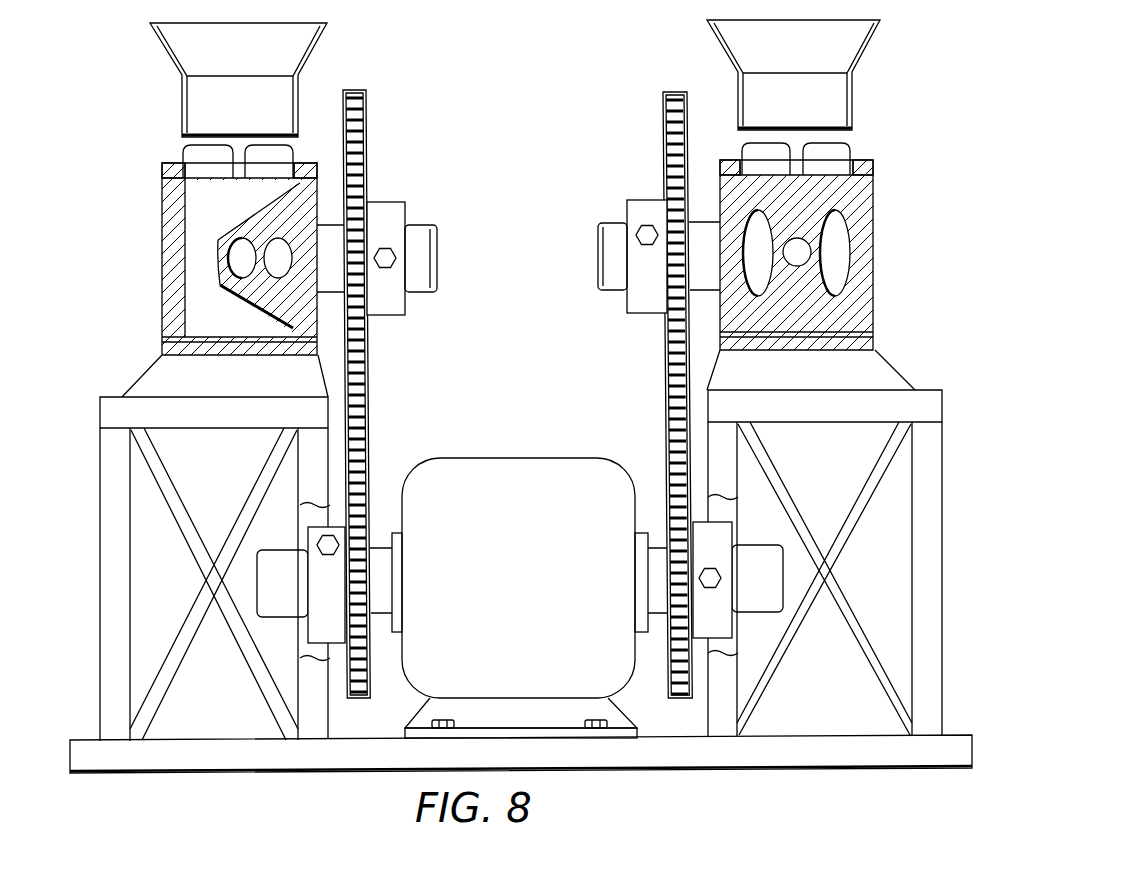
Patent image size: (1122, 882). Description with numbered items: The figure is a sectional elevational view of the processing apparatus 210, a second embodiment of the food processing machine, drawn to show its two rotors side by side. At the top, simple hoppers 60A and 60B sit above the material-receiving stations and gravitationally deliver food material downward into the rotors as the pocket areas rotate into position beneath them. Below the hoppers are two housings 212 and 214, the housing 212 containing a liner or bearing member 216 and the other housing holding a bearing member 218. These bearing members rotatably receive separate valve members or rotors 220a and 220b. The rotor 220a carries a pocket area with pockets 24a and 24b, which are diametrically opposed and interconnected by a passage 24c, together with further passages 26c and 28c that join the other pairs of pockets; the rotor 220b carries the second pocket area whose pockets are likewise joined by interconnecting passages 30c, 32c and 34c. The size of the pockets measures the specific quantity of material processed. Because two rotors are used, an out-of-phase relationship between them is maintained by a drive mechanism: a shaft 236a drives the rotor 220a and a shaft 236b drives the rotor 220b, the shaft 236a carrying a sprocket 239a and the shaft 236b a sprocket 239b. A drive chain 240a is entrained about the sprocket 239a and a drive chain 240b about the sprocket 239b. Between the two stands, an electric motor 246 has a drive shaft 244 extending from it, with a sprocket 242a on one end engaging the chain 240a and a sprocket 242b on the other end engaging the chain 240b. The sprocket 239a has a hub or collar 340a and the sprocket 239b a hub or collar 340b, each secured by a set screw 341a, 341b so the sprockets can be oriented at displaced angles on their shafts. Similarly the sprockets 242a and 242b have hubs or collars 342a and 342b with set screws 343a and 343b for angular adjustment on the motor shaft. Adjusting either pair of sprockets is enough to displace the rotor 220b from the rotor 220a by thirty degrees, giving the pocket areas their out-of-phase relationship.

The hopper 60A is at (175, 66).
The hopper 60B is at (866, 50).
The housing 212 is at (177, 167).
The housing 214 is at (862, 172).
The liner or bearing member 216 is at (172, 177).
The bearing member 218 is at (862, 173).
The pocket 24a is at (192, 190).
The pocket 24b is at (188, 325).
The passage 24c is at (198, 260).
The passage 26c is at (278, 278).
The passage 28c is at (235, 240).
The interconnecting passage 30c is at (837, 217).
The interconnecting passage 32c is at (805, 258).
The interconnecting passage 34c is at (760, 297).
The valve member or rotor 220a is at (162, 238).
The valve member or rotor 220b is at (873, 240).
The sprocket 239a is at (356, 128).
The sprocket 239b is at (670, 134).
The hub or collar 340a is at (387, 218).
The hub or collar 340b is at (645, 203).
The set screw 341a is at (390, 252).
The set screw 341b is at (642, 232).
The shaft 236a is at (420, 285).
The shaft 236b is at (610, 282).
The processing apparatus 210 is at (510, 380).
The drive chain 240a is at (370, 418).
The drive chain 240b is at (670, 435).
The electric motor 246 is at (500, 483).
The drive shaft 244 is at (380, 573).
The sprocket 242a is at (358, 645).
The sprocket 242b is at (678, 641).
The hub or collar 342a is at (318, 627).
The hub or collar 342b is at (720, 628).
The set screw 343a is at (320, 542).
The set screw 343b is at (712, 575).